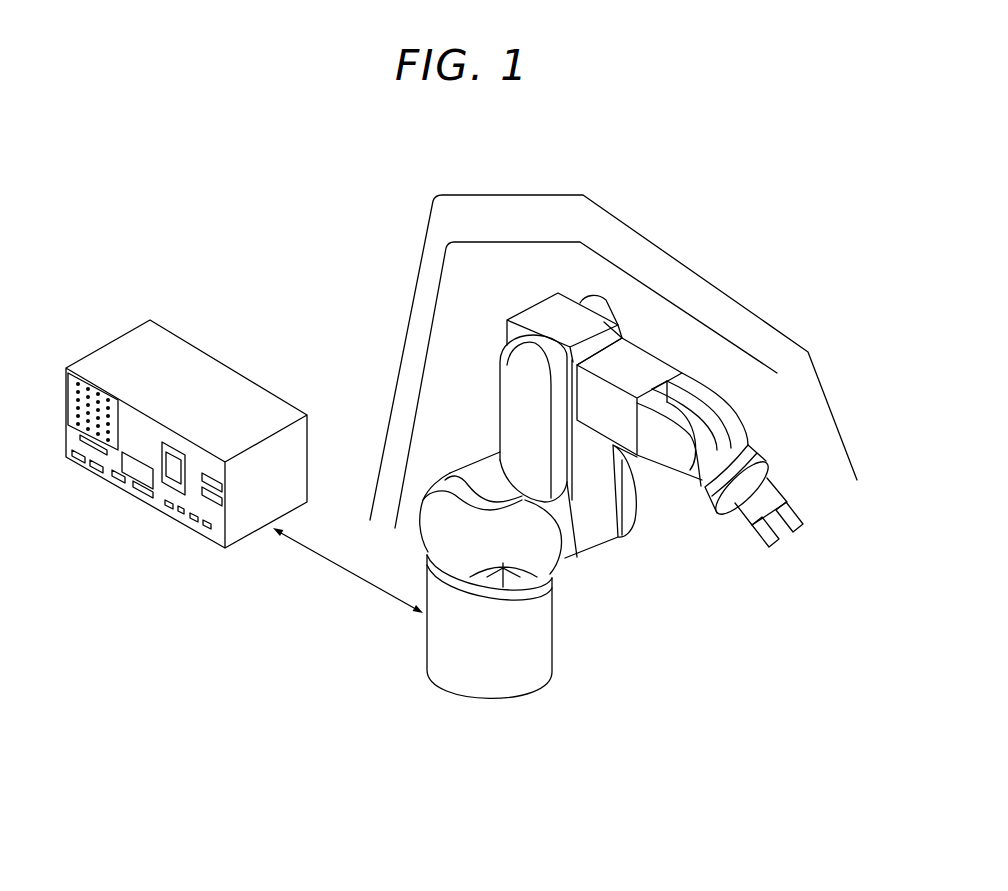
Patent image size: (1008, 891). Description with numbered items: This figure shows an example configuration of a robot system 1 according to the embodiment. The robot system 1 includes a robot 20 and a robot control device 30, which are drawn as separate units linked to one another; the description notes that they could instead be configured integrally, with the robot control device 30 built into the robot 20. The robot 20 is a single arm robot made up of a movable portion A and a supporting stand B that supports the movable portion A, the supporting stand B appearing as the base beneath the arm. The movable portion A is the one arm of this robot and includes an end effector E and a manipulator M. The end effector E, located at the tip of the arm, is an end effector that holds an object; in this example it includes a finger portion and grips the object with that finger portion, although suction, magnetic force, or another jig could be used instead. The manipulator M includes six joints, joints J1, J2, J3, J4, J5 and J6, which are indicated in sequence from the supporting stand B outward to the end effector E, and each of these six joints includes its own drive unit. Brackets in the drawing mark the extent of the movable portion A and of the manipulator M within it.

The robot system 1 is at (467, 122).
The movable portion A is at (613, 343).
The manipulator M is at (586, 369).
The robot control device 30 is at (135, 495).
The robot 20 is at (635, 528).
The supporting stand B is at (552, 672).
The joint J1 is at (481, 610).
The joint J2 is at (578, 559).
The joint J3 is at (518, 372).
The joint J4 is at (584, 403).
The joint J5 is at (679, 461).
The joint J6 is at (694, 494).
The end effector E is at (800, 508).